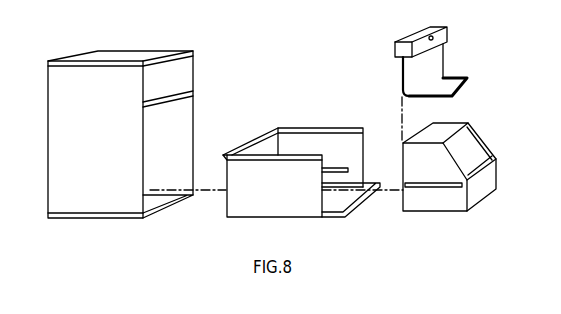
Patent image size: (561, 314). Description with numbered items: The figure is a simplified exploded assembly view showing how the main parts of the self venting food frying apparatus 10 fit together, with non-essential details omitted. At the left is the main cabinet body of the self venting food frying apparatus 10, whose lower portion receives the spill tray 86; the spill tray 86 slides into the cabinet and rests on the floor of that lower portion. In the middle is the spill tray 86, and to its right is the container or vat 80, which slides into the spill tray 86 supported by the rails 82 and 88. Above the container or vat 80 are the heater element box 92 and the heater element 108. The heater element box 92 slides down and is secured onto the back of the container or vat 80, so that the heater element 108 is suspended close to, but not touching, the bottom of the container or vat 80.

The self venting food frying apparatus 10 is at (120, 134).
The spill tray 86 is at (301, 172).
The rail 88 is at (349, 171).
The container or vat 80 is at (449, 167).
The rail 82 is at (462, 186).
The heater element box 92 is at (410, 40).
The heater element 108 is at (467, 77).